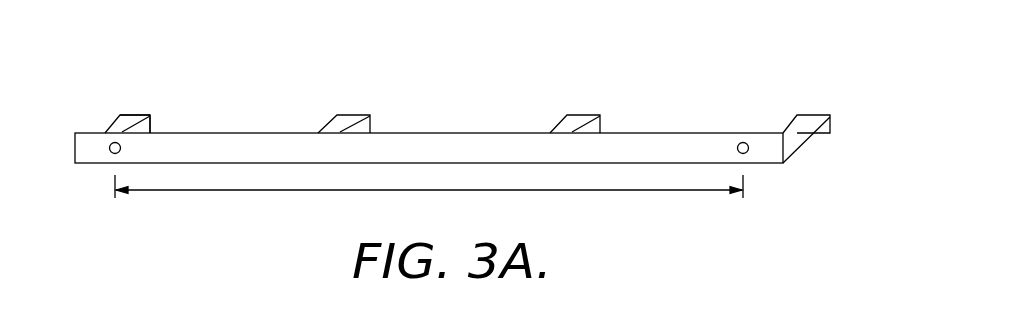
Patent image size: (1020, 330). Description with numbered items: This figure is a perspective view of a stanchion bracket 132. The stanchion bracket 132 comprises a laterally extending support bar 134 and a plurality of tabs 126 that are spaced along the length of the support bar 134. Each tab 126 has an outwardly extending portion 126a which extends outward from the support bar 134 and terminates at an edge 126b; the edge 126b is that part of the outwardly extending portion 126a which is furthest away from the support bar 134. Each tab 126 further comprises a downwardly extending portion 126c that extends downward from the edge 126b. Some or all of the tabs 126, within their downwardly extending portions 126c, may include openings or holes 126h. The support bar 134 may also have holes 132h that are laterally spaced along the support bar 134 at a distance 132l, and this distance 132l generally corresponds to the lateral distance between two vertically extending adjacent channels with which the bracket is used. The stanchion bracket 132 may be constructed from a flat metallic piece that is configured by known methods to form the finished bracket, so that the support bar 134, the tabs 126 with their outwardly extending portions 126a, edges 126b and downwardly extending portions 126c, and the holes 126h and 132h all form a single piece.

The stanchion bracket 132 is at (487, 36).
The holes 132h is at (112, 154).
The distance 132l is at (429, 198).
The support bar 134 is at (392, 148).
The tabs 126 is at (325, 118).
The outwardly extending portion 126a is at (104, 132).
The edge 126b is at (140, 115).
The downwardly extending portion 126c is at (153, 125).
The holes 126h is at (583, 131).